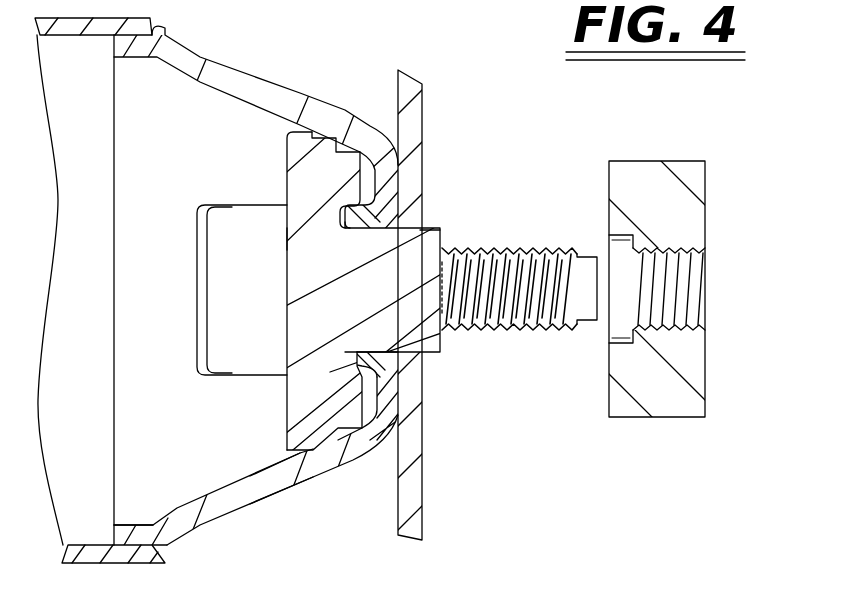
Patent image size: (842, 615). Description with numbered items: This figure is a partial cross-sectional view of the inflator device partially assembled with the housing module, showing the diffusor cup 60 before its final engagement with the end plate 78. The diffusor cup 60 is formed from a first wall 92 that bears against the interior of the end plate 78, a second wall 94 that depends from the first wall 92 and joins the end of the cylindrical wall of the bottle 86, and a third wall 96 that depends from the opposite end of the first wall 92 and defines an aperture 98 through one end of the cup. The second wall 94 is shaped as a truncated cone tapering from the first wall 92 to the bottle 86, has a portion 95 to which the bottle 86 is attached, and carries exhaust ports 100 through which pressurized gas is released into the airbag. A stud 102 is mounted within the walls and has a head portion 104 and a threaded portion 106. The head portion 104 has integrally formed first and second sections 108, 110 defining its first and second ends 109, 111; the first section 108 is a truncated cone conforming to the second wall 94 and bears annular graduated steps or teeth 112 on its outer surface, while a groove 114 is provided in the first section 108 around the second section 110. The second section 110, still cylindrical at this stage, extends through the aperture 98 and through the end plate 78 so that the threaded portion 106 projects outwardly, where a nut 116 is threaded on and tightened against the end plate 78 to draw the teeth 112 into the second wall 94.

The diffusor cup 60 is at (184, 534).
The end plate 78 is at (423, 484).
The bottle 86 is at (82, 556).
The first wall 92 is at (393, 402).
The second wall 94 is at (313, 462).
The portion 95 is at (128, 528).
The third wall 96 is at (365, 380).
The aperture 98 is at (373, 350).
The exhaust ports 100 is at (212, 238).
The stud 102 is at (441, 240).
The head portion 104 is at (290, 152).
The threaded portion 106 is at (518, 262).
The first section 108 is at (300, 277).
The first end 109 is at (286, 236).
The second section 110 is at (425, 302).
The second end 111 is at (426, 253).
The annular graduated steps or teeth 112 is at (333, 130).
The groove 114 is at (350, 360).
The nut 116 is at (690, 220).